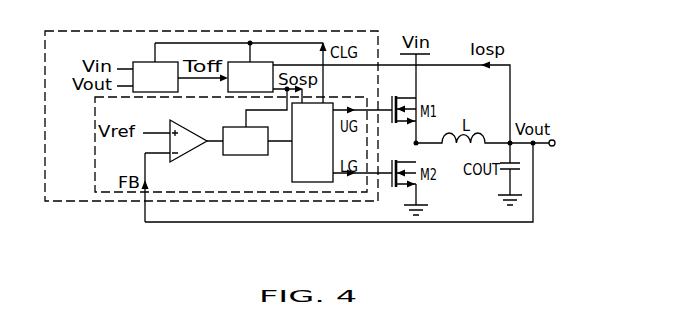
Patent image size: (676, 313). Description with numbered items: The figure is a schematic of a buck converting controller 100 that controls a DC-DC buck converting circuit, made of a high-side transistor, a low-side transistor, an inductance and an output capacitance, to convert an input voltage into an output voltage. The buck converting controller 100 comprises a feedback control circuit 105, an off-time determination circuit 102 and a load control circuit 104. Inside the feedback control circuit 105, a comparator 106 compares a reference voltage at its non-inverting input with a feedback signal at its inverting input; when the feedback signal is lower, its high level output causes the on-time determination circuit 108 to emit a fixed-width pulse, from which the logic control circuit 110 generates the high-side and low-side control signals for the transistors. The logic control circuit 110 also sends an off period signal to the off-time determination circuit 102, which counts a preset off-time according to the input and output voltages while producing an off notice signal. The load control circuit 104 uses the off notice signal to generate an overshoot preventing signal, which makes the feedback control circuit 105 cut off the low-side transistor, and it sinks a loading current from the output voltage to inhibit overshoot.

The buck converting controller 100 is at (221, 31).
The off-time determination circuit 102 is at (169, 87).
The load control circuit 104 is at (264, 87).
The feedback control circuit 105 is at (94, 146).
The comparator 106 is at (190, 151).
The on-time determination circuit 108 is at (259, 151).
The logic control circuit 110 is at (327, 145).